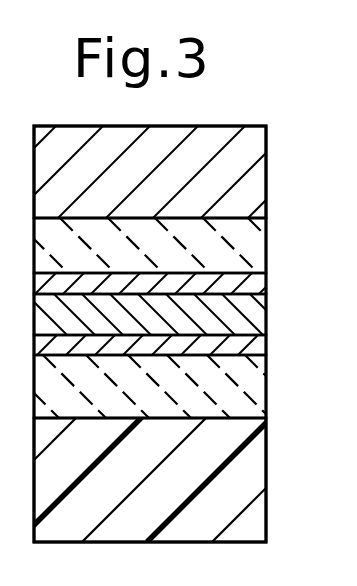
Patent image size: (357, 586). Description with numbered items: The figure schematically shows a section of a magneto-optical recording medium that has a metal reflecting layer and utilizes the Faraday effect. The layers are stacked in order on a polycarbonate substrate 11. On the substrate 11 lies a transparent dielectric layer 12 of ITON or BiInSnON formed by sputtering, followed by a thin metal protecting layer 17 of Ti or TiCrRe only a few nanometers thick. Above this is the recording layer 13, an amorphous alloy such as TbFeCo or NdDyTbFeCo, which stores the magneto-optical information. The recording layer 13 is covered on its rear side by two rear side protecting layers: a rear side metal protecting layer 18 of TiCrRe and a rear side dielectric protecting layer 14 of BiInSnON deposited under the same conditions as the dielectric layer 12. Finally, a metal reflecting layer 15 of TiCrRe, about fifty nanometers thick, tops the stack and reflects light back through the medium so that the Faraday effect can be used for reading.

The polycarbonate substrate 11 is at (258, 443).
The transparent dielectric layer 12 is at (262, 381).
The metal protecting layer 17 is at (262, 347).
The recording layer 13 is at (262, 318).
The rear side metal protecting layer 18 is at (262, 289).
The rear side dielectric protecting layer 14 is at (262, 238).
The metal reflecting layer 15 is at (257, 152).